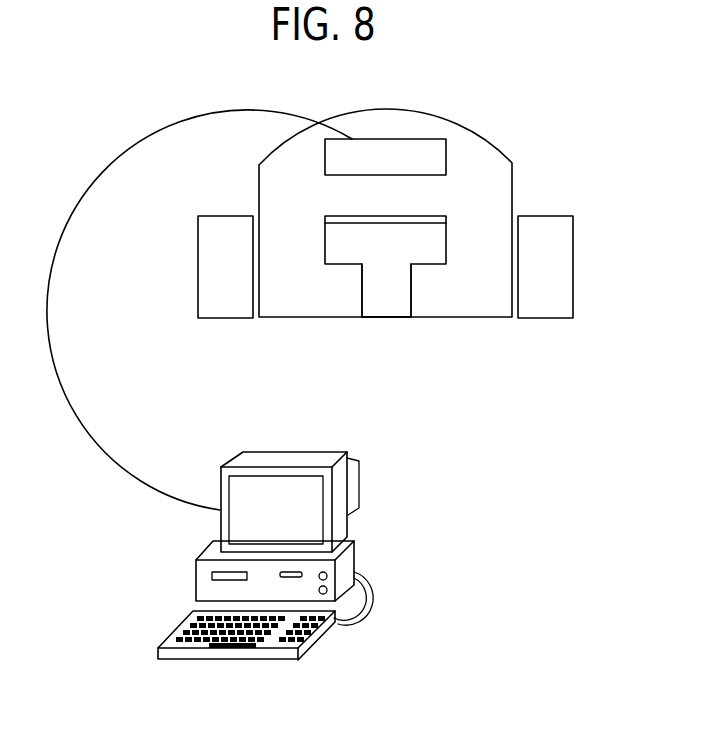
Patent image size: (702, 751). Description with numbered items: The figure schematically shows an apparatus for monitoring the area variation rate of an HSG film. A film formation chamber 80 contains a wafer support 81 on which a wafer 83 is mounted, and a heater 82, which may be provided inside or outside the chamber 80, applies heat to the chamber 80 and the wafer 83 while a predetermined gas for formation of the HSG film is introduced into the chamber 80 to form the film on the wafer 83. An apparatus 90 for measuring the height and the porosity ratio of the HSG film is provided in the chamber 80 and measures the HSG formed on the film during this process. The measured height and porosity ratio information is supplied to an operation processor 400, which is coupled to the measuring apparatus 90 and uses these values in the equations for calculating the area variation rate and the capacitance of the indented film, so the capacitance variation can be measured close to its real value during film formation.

The film formation chamber 80 is at (483, 153).
The wafer support 81 is at (392, 298).
The heater 82 is at (567, 275).
The wafer 83 is at (423, 217).
The apparatus for measuring the height and the porosity ratio of HSG film 90 is at (423, 147).
The operation processor 400 is at (267, 449).